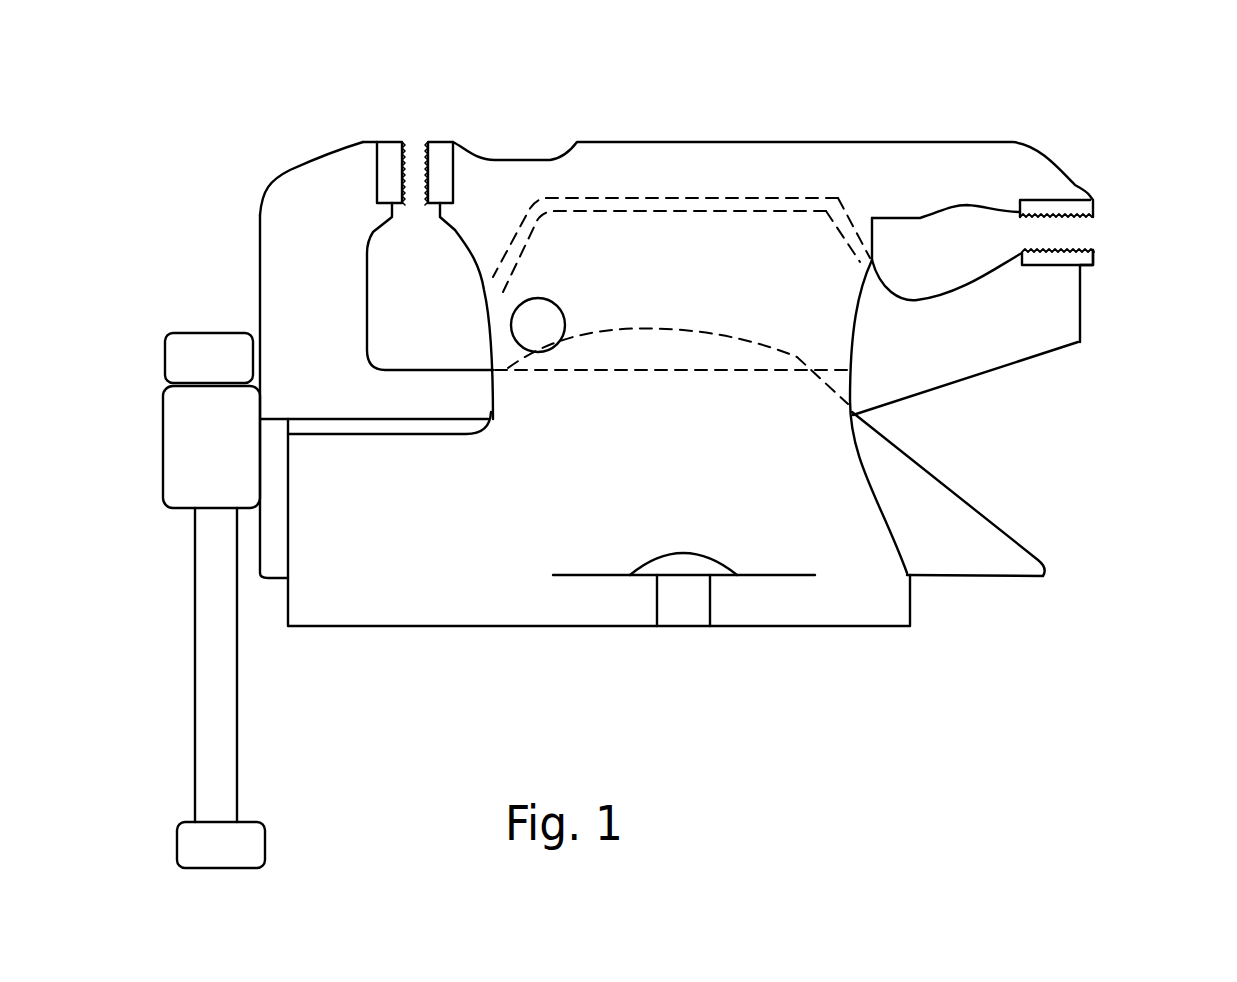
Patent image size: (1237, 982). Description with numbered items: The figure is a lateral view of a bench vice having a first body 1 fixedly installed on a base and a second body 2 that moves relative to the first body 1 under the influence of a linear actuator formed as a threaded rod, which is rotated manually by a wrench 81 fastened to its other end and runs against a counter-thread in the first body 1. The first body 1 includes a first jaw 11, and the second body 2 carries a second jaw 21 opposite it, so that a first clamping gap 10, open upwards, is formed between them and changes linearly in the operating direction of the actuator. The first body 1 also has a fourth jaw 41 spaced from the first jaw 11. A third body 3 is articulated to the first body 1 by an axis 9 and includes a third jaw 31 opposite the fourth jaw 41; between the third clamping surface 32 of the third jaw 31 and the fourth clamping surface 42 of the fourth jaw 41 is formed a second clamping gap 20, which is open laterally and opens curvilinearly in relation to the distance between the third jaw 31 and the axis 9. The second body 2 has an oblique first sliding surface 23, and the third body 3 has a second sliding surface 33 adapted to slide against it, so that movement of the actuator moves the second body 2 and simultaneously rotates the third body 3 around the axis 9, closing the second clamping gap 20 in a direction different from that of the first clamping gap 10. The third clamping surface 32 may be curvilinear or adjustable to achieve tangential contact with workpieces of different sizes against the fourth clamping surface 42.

The first body 1 is at (737, 167).
The second body 2 is at (297, 252).
The second jaw 21 is at (350, 177).
The first sliding surface 23 is at (877, 433).
The third body 3 is at (980, 350).
The third jaw 31 is at (1042, 295).
The third clamping surface 32 is at (1087, 258).
The second sliding surface 33 is at (798, 367).
The fourth jaw 41 is at (1045, 180).
The fourth clamping surface 42 is at (1080, 208).
The axis 9 is at (537, 318).
The first clamping gap 10 is at (370, 78).
The first jaw 11 is at (468, 177).
The second clamping gap 20 is at (1090, 233).
The wrench 81 is at (222, 680).